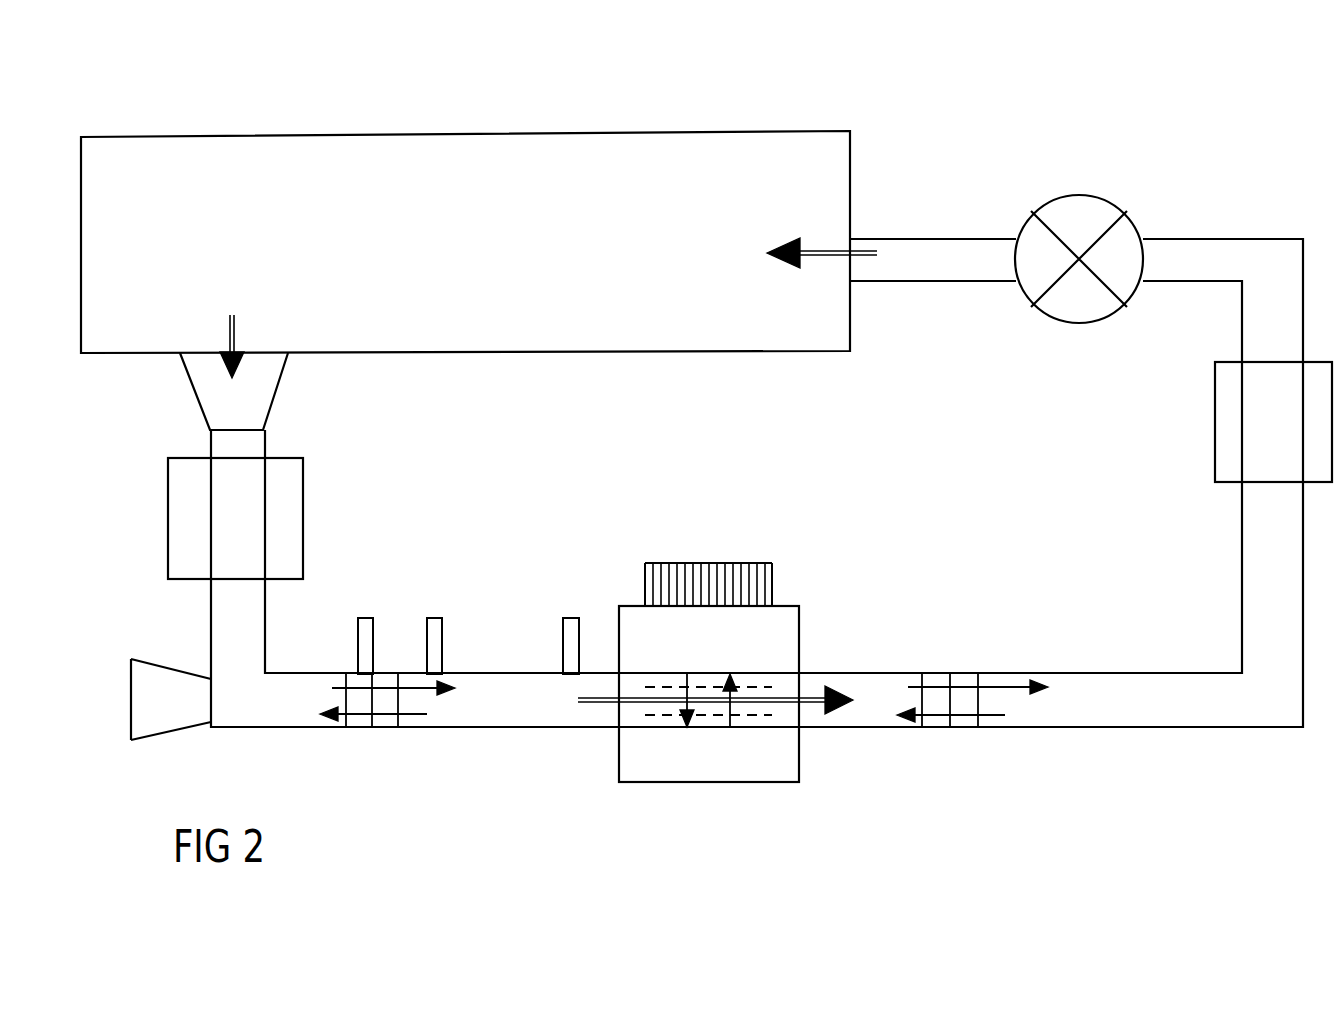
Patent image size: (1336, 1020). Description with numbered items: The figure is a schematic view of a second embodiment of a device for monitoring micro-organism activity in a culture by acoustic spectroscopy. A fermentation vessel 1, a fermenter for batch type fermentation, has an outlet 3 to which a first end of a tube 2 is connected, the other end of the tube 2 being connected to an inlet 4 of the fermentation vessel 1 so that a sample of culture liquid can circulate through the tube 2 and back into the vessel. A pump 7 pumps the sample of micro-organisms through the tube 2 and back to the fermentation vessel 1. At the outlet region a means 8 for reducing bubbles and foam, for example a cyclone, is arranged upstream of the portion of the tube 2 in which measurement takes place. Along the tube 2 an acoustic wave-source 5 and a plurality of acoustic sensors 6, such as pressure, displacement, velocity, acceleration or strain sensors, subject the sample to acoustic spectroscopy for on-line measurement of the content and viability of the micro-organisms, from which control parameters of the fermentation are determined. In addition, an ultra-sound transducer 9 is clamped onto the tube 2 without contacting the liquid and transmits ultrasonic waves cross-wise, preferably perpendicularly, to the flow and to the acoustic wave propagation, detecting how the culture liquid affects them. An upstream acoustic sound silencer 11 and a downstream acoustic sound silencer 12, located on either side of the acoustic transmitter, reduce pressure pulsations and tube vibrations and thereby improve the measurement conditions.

The fermentation vessel 1 is at (190, 168).
The tube 2 is at (1093, 672).
The outlet 3 is at (266, 351).
The inlet 4 is at (850, 238).
The acoustic wave-source 5 is at (147, 700).
The acoustic sensors 6 is at (563, 625).
The pump 7 is at (1088, 213).
The means for reducing bubbles and foam 8 is at (212, 388).
The ultra-sound transducer 9 is at (747, 600).
The upstream acoustic sound silencer 11 is at (190, 517).
The downstream acoustic sound silencer 12 is at (1228, 418).